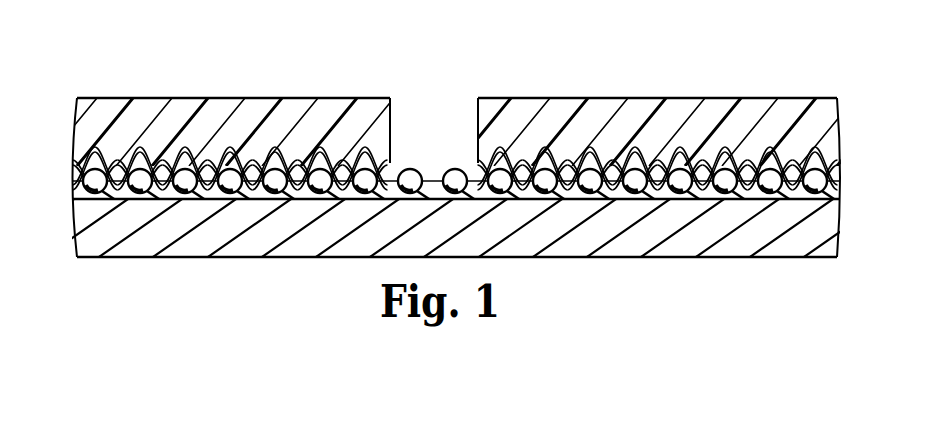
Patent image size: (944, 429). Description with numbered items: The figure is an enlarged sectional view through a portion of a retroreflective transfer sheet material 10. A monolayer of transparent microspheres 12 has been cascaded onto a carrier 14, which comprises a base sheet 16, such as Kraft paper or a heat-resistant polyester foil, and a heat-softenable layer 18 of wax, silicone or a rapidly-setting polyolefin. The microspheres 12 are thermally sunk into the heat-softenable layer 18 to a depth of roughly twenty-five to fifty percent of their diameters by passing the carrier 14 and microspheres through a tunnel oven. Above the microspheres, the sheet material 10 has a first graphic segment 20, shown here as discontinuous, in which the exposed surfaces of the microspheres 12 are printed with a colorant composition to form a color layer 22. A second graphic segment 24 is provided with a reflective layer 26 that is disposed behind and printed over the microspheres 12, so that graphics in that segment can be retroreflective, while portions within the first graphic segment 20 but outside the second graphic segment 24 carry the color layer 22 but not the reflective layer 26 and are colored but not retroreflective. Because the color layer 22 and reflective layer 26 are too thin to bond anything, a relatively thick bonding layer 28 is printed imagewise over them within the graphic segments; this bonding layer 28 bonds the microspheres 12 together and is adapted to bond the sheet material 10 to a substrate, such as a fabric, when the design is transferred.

The retroreflective transfer sheet material 10 is at (633, 272).
The transparent microspheres 12 is at (82, 172).
The carrier 14 is at (847, 181).
The base sheet 16 is at (778, 247).
The heat-softenable layer 18 is at (262, 195).
The first graphic segment 20 is at (392, 58).
The color layer 22 is at (148, 156).
The second graphic segment 24 is at (389, 93).
The reflective layer 26 is at (392, 140).
The bonding layer 28 is at (98, 122).